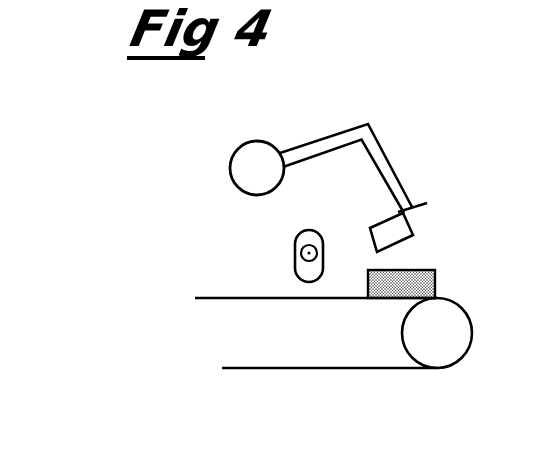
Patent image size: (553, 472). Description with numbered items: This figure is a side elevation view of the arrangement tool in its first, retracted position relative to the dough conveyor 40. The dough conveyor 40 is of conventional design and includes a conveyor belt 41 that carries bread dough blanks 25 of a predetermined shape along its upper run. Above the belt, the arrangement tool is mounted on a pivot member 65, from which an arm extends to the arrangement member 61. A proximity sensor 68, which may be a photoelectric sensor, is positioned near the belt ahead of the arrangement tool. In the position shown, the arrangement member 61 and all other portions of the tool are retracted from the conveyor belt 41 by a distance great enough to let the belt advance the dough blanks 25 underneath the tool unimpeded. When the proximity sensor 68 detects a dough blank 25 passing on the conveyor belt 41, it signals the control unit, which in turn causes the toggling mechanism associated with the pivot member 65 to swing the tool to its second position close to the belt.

The dough blank 25 is at (415, 270).
The dough conveyor 40 is at (490, 346).
The conveyor belt 41 is at (208, 298).
The arrangement member 61 is at (386, 223).
The pivot member 65 is at (236, 162).
The proximity sensor 68 is at (297, 252).